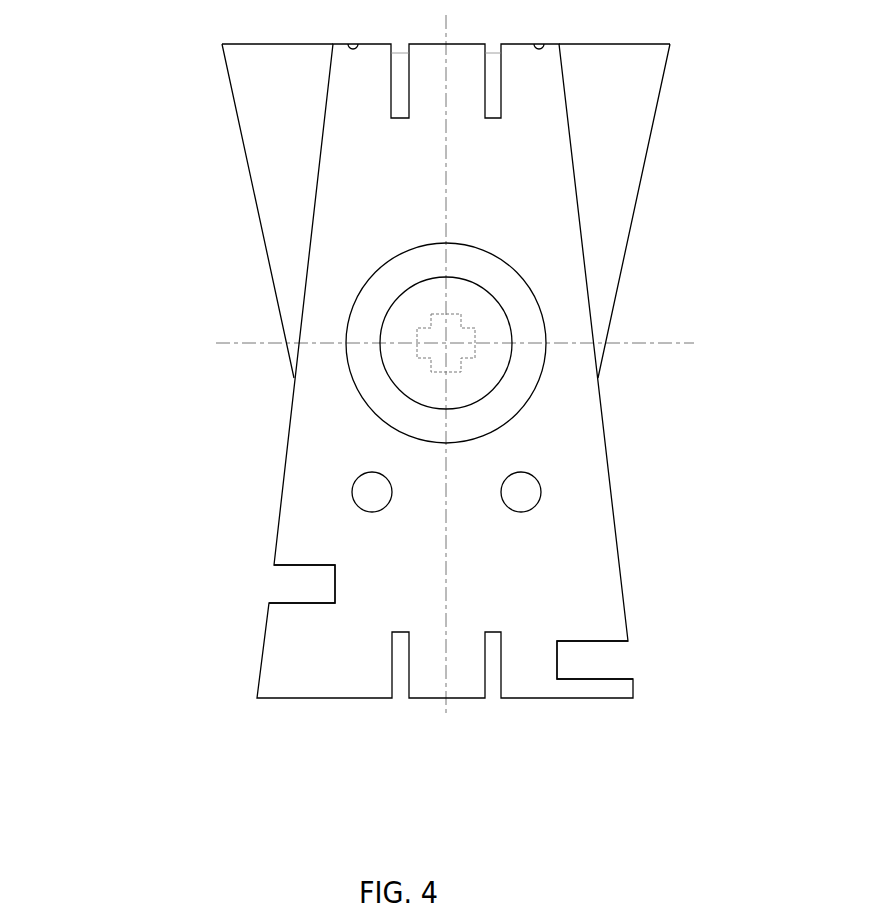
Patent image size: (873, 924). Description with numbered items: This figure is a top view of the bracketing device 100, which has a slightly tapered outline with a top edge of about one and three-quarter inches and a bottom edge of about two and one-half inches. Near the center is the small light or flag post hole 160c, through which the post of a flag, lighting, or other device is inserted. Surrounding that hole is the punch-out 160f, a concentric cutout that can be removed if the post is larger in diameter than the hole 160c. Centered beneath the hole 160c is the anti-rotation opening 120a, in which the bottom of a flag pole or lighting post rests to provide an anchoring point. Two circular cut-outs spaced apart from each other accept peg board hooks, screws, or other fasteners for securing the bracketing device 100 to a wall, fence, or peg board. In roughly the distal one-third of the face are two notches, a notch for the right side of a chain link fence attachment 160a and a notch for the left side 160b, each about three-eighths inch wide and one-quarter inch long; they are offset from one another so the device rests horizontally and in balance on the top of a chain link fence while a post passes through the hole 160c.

The bracketing device 100 is at (324, 371).
The anti-rotation opening 120a is at (462, 351).
The notch for the right side of a chain link fence attachment 160a is at (302, 588).
The notch for the left side of a chain link fence attachment 160b is at (605, 661).
The small light or flag post hole 160c is at (410, 313).
The punch-out 160f is at (500, 277).